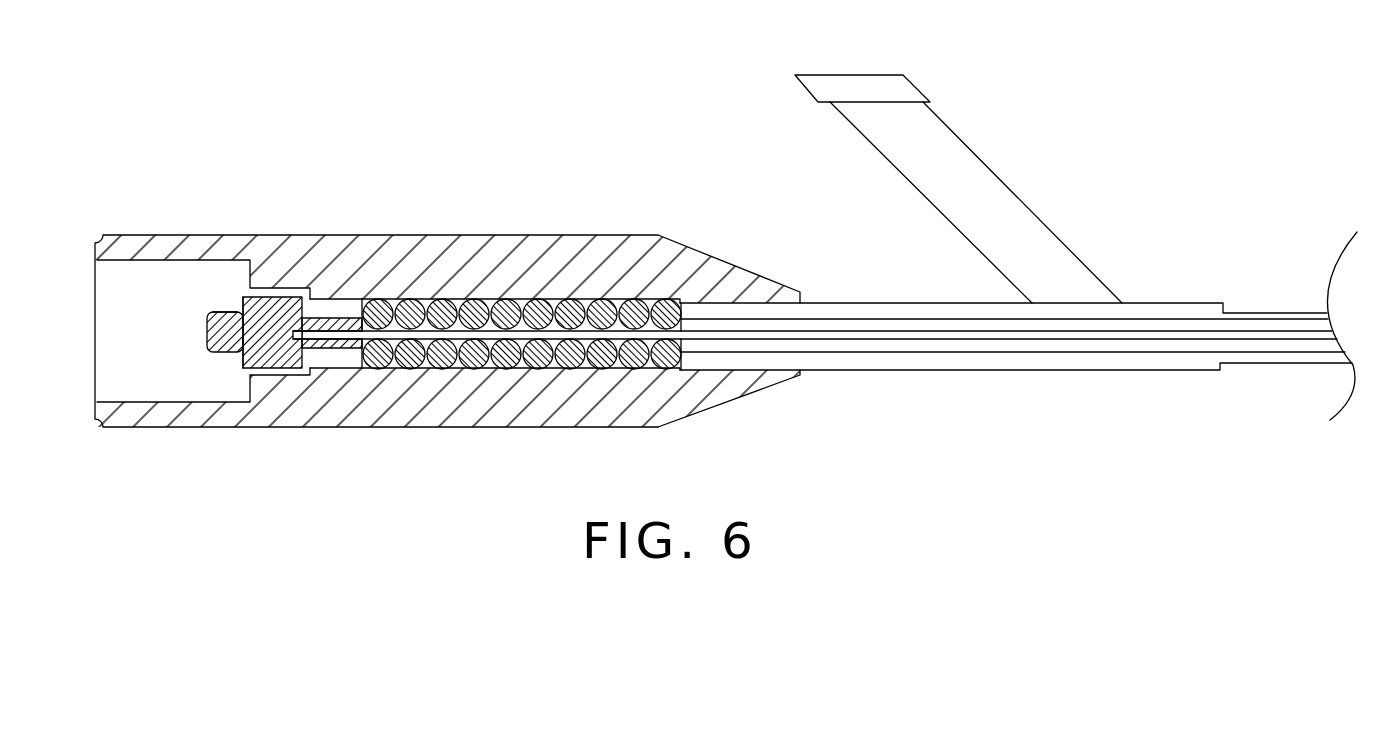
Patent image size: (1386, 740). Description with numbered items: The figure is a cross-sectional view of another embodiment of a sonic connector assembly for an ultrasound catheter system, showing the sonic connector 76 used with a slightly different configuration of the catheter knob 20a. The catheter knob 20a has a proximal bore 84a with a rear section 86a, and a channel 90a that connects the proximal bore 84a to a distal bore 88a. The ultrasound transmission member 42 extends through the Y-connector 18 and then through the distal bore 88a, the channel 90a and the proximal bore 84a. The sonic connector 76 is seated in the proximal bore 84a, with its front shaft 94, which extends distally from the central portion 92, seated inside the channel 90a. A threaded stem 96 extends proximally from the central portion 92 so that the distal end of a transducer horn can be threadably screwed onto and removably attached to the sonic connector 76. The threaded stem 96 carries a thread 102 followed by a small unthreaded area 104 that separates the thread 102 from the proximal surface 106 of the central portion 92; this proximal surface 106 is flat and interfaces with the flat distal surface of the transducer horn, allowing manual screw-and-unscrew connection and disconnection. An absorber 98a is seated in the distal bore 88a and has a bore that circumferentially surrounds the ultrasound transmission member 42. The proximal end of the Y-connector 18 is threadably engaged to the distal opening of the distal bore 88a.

The Y-connector 18 is at (1122, 257).
The catheter knob 20a is at (508, 238).
The ultrasound transmission member 42 is at (878, 341).
The sonic connector 76 is at (274, 308).
The proximal bore 84a is at (305, 372).
The rear section 86a is at (220, 394).
The distal bore 88a is at (762, 373).
The channel 90a is at (337, 316).
The central portion 92 is at (263, 370).
The front shaft 94 is at (362, 368).
The threaded stem 96 is at (207, 328).
The absorber 98a is at (453, 368).
The thread 102 is at (220, 312).
The unthreaded area 104 is at (231, 310).
The proximal surface 106 is at (262, 356).